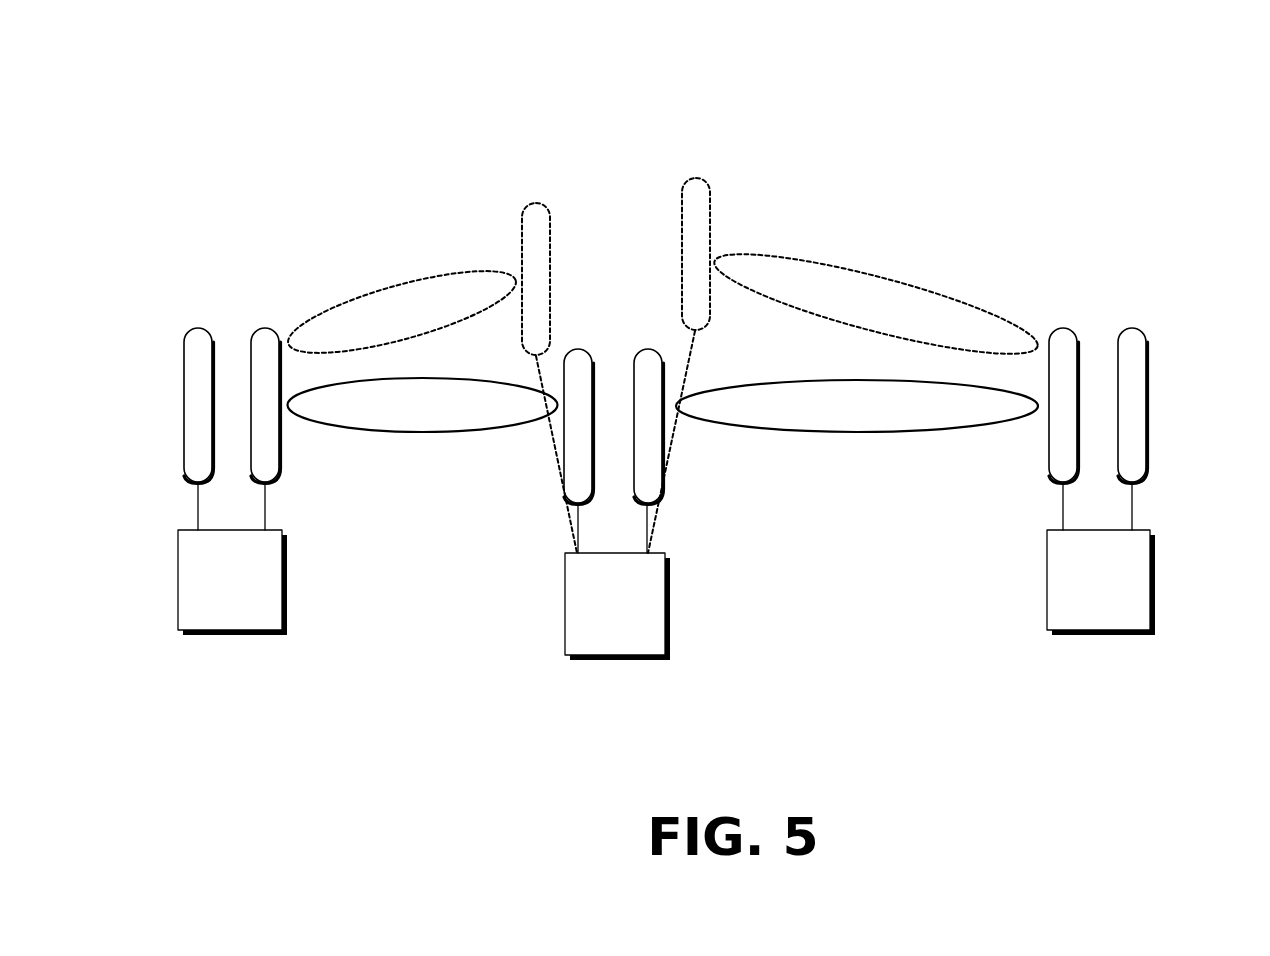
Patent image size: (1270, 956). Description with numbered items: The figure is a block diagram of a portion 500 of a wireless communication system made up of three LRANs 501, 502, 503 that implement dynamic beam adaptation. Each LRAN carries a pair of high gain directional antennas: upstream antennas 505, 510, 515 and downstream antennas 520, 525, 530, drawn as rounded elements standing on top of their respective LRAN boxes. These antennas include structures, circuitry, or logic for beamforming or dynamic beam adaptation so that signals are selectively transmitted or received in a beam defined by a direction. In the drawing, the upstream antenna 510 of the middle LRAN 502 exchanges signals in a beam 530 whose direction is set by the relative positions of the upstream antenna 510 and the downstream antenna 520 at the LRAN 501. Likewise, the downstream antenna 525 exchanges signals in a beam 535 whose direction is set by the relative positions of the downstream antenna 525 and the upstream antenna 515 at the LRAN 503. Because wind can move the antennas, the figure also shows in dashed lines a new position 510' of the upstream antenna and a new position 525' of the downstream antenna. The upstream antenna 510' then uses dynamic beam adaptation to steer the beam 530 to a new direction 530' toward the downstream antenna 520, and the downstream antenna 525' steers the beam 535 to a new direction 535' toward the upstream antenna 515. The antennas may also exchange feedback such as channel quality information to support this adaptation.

The portion of a wireless communication system 500 is at (1152, 118).
The LRAN 501 is at (178, 580).
The LRAN 502 is at (565, 603).
The LRAN 503 is at (1047, 580).
The upstream high gain directional antenna 505 is at (197, 325).
The upstream high gain directional antenna 510 is at (546, 428).
The new position of upstream antenna 510' is at (522, 354).
The upstream high gain directional antenna 515 is at (1063, 325).
The downstream high gain directional antenna 520 is at (263, 323).
The downstream high gain directional antenna 525 is at (683, 429).
The new position of downstream antenna 525' is at (707, 342).
The beam 530 is at (741, 377).
The new beam direction 530' is at (402, 303).
The beam 535 is at (857, 423).
The new beam direction 535' is at (876, 295).